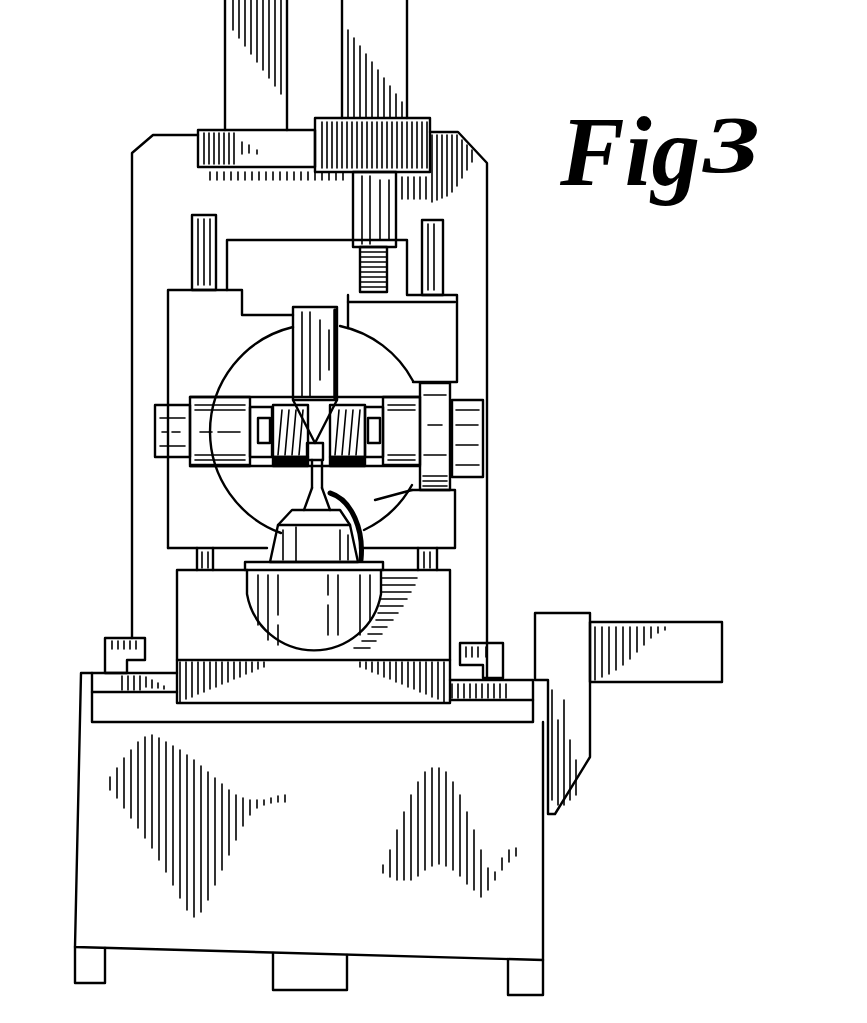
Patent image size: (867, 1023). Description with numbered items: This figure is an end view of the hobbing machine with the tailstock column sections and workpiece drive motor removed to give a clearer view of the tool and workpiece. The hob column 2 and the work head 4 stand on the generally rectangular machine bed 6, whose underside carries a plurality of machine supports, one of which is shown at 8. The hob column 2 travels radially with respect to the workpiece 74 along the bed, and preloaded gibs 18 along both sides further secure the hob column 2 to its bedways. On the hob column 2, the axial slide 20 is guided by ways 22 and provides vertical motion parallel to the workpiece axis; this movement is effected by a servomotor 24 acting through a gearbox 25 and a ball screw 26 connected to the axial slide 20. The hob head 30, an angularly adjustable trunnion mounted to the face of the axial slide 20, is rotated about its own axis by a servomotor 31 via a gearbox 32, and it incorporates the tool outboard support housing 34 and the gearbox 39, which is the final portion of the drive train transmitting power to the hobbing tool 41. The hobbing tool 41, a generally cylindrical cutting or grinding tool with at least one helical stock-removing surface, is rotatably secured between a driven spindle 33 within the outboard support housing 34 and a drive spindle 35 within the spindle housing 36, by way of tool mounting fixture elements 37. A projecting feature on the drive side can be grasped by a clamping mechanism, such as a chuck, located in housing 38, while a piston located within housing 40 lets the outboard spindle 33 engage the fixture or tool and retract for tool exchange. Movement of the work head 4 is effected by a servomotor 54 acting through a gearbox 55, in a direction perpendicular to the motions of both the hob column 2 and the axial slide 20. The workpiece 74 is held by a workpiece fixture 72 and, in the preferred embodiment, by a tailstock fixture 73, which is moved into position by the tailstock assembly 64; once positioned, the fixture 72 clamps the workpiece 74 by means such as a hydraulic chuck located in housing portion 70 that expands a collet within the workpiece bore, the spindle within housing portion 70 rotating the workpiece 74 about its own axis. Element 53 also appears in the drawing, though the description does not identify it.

The hob column 2 is at (131, 206).
The work head 4 is at (226, 631).
The machine bed 6 is at (308, 885).
The machine support 8 is at (105, 975).
The preloaded gibs 18 is at (105, 638).
The axial slide 20 is at (446, 312).
The ways 22 is at (446, 244).
The servomotor 24 is at (400, 39).
The gearbox 25 is at (425, 118).
The ball screw 26 is at (360, 270).
The hob head 30 is at (260, 355).
The servomotor 31 is at (227, 35).
The gearbox 32 is at (200, 128).
The driven spindle 33 is at (230, 480).
The tool outboard support housing 34 is at (193, 470).
The drive spindle 35 is at (452, 395).
The spindle housing 36 is at (441, 415).
The tool mounting fixture elements 37 is at (378, 404).
The housing 38 is at (458, 455).
The gearbox 39 is at (457, 445).
The housing 40 is at (157, 430).
The hobbing tool 41 is at (265, 387).
The mounting plate 53 is at (133, 685).
The servomotor 54 is at (680, 685).
The gearbox 55 is at (567, 613).
The tailstock assembly 64 is at (343, 330).
The housing portion 70 is at (267, 540).
The workpiece fixture 72 is at (370, 523).
The tailstock fixture 73 is at (440, 315).
The workpiece 74 is at (343, 477).